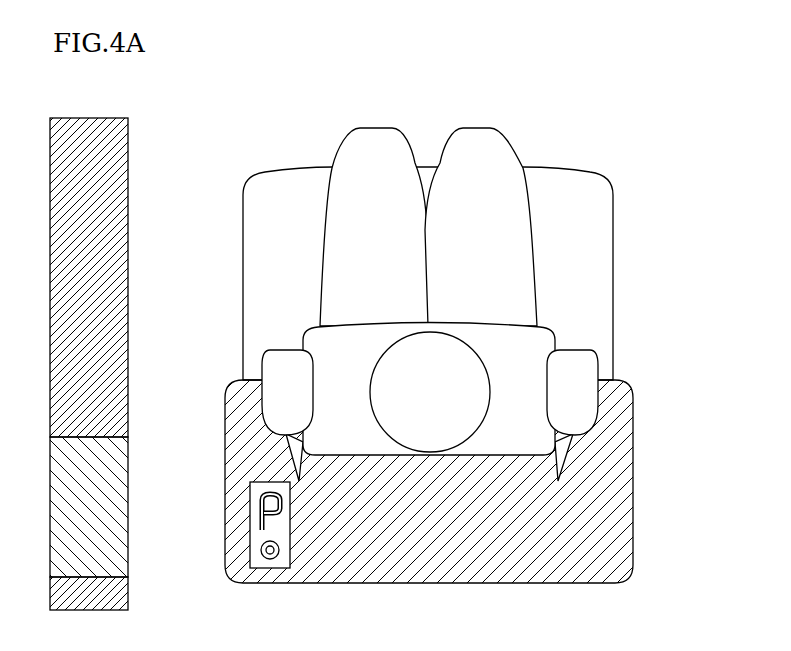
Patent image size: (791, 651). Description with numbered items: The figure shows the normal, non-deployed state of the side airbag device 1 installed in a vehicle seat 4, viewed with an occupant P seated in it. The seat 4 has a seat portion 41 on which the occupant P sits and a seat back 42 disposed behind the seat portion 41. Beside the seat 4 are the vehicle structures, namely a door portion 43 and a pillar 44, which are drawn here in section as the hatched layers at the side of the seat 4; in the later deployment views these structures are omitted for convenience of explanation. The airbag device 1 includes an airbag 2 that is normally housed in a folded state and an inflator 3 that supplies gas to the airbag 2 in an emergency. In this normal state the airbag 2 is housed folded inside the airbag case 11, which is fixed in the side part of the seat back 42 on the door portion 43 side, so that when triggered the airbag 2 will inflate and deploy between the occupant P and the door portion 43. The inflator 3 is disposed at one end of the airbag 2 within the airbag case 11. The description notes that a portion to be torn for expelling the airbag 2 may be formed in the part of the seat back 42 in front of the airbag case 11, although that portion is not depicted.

The airbag device 1 is at (249, 485).
The airbag 2 is at (258, 512).
The inflator 3 is at (261, 548).
The airbag case 11 is at (243, 549).
The seat 4 is at (444, 376).
The seat portion 41 is at (614, 279).
The seat back 42 is at (634, 477).
The door portion 43 is at (50, 270).
The pillar 44 is at (50, 502).